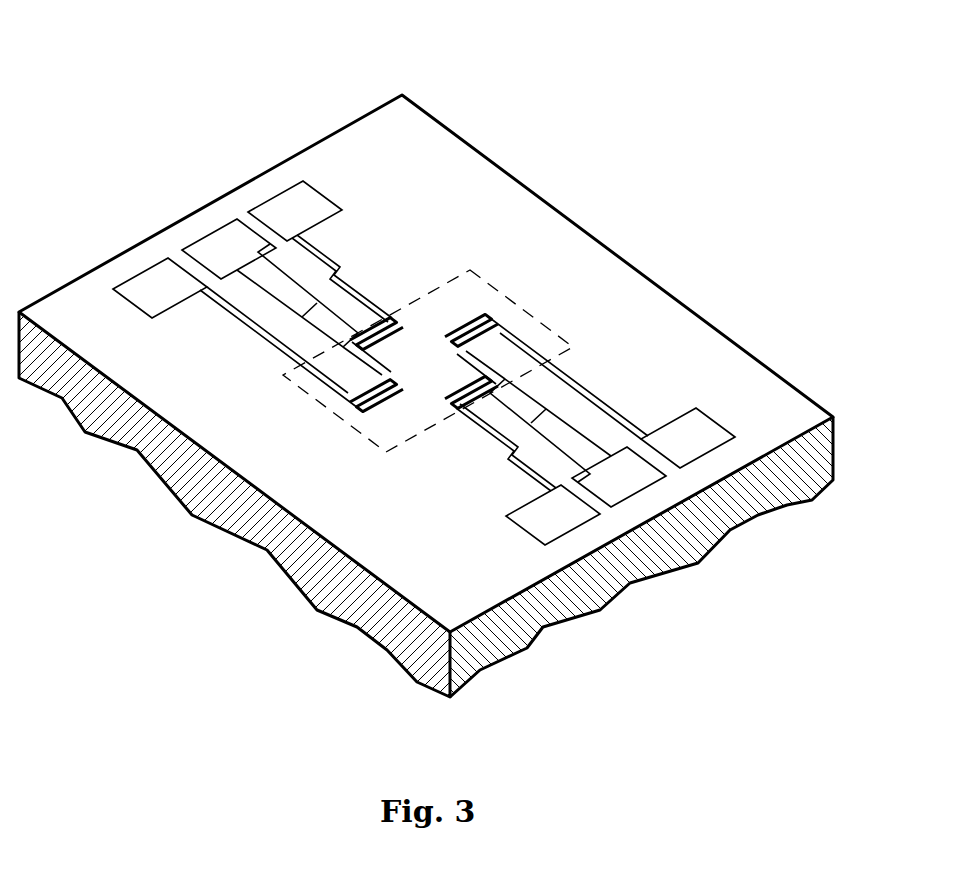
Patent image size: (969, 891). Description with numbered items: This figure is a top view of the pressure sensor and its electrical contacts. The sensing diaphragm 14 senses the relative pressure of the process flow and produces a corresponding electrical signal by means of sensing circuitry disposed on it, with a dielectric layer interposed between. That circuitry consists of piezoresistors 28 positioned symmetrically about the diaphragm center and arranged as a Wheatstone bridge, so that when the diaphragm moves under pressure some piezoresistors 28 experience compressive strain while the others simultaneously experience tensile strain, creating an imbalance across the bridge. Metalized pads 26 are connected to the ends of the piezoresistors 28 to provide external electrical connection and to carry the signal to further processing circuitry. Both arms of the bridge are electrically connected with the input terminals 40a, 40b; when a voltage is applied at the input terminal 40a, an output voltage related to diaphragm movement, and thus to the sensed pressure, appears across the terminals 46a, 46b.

The sensing diaphragm 14 is at (336, 407).
The metalized pads 26 is at (424, 363).
The piezoresistor 28 is at (473, 322).
The input terminal 40a is at (273, 195).
The input terminal 40b is at (137, 273).
The terminal 46a is at (647, 490).
The terminal 46b is at (208, 233).